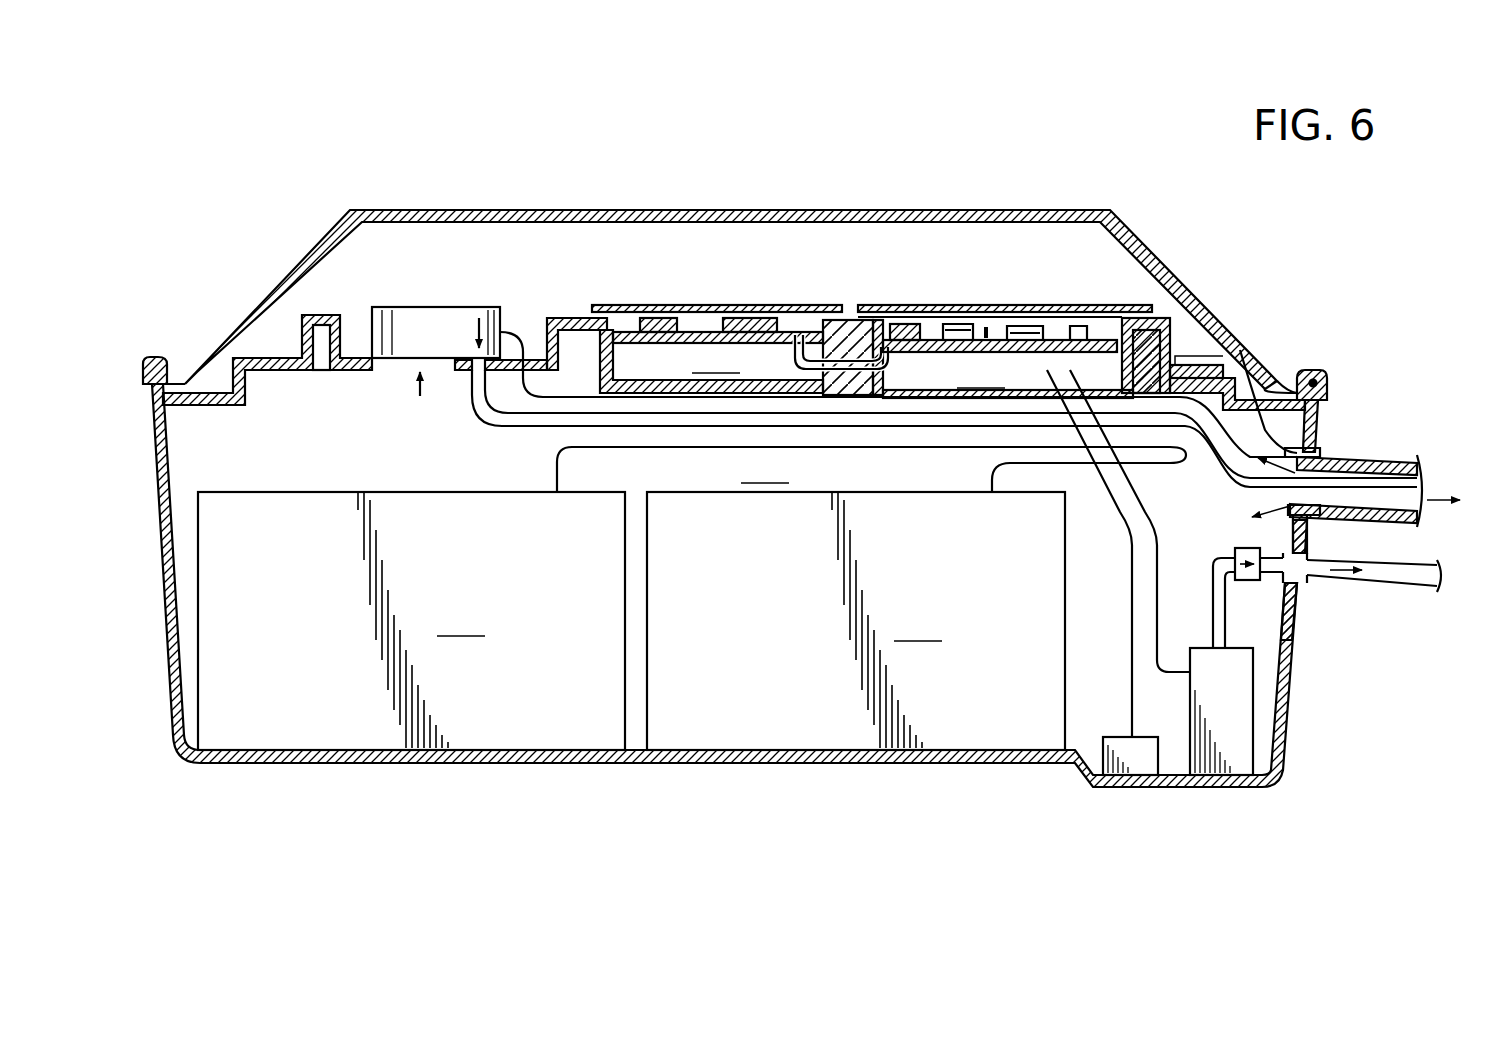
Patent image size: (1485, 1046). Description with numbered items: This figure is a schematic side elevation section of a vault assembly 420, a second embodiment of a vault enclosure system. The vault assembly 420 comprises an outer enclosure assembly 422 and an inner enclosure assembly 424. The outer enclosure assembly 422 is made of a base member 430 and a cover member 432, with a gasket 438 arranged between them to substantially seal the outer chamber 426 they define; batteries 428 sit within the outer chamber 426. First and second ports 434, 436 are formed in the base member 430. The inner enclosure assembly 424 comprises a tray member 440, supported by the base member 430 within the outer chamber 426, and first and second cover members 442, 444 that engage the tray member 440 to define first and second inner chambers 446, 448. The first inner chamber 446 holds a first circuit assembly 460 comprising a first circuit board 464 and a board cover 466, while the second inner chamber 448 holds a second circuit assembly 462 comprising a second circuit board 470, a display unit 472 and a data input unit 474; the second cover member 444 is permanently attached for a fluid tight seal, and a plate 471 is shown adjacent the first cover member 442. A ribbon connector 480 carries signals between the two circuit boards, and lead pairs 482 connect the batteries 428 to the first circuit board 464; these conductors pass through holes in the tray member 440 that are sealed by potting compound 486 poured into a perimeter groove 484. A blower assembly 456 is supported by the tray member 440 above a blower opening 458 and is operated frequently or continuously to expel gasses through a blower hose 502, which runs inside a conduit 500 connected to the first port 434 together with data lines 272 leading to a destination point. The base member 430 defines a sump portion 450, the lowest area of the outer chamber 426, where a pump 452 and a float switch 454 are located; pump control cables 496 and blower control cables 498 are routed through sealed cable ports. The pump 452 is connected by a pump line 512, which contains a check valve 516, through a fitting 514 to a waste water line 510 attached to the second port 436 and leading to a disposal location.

The vault assembly 420 is at (735, 585).
The outer enclosure assembly 422 is at (1163, 215).
The inner enclosure assembly 424 is at (635, 292).
The outer chamber 426 is at (871, 469).
The batteries 428 is at (631, 621).
The base member 430 is at (638, 764).
The cover member 432 is at (651, 210).
The first port 434 is at (1335, 440).
The second port 436 is at (1313, 592).
The gasket 438 is at (1330, 386).
The tray member 440 is at (258, 353).
The first cover member 442 is at (1040, 323).
The second cover member 444 is at (627, 312).
The first inner chamber 446 is at (1008, 369).
The second inner chamber 448 is at (711, 361).
The sump portion 450 is at (1172, 768).
The pump 452 is at (1240, 728).
The float switch 454 is at (1138, 768).
The blower assembly 456 is at (385, 330).
The blower opening 458 is at (407, 364).
The first circuit assembly 460 is at (987, 327).
The second circuit assembly 462 is at (787, 325).
The first circuit board 464 is at (963, 323).
The board cover 466 is at (1053, 323).
The second circuit board 470 is at (803, 333).
The plate 471 is at (1163, 342).
The display unit 472 is at (657, 318).
The data input unit 474 is at (745, 318).
The ribbon connector 480 is at (860, 320).
The lead pairs 482 is at (672, 450).
The perimeter groove 484 is at (1172, 353).
The potting compound 486 is at (1190, 378).
The pump control cables 496 is at (1157, 572).
The blower control cables 498 is at (570, 397).
The conduit 500 is at (1367, 467).
The blower hose 502 is at (476, 424).
The waste water line 510 is at (1403, 580).
The pump line 512 is at (1227, 647).
The fitting 514 is at (1313, 557).
The check valve 516 is at (1223, 628).
The data lines 272 is at (1250, 385).